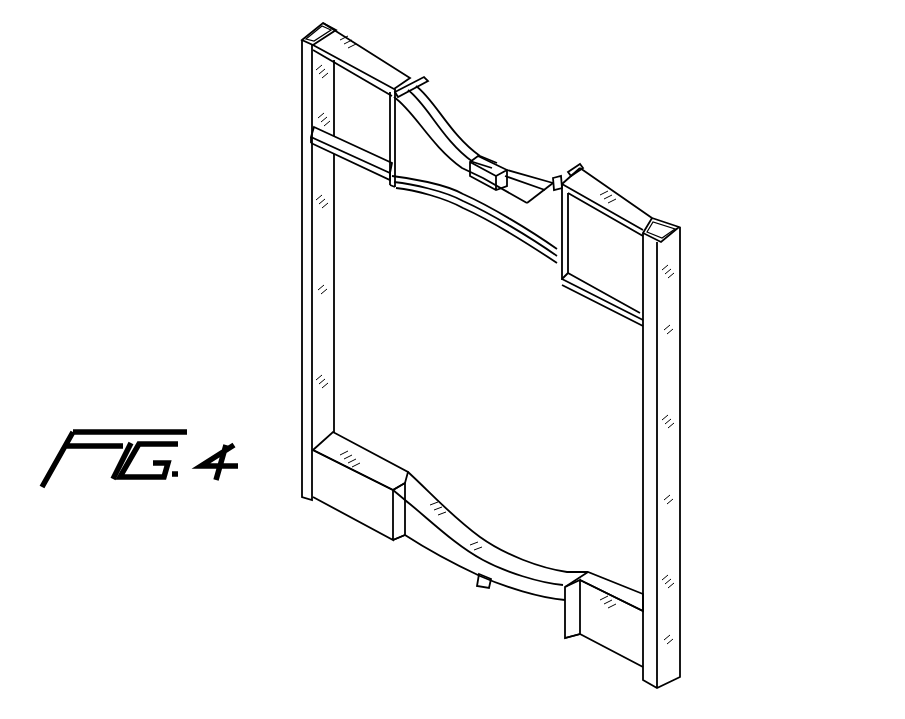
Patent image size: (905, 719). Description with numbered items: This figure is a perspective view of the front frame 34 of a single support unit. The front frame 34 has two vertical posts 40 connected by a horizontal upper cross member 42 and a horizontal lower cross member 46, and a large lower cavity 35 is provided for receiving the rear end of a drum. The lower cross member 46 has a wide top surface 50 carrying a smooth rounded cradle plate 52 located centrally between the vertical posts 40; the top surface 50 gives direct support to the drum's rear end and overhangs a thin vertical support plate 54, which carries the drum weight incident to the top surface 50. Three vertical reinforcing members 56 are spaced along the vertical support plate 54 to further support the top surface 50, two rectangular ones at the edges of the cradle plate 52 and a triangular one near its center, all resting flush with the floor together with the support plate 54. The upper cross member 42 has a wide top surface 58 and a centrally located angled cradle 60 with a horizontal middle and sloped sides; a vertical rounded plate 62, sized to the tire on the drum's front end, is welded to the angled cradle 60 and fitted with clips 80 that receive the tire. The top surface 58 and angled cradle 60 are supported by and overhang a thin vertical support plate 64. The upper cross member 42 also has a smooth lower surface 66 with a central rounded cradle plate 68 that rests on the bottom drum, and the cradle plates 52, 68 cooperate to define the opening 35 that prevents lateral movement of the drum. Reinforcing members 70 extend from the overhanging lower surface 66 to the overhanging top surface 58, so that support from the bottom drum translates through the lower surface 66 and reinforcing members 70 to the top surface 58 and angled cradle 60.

The front frame 34 is at (655, 96).
The lower cavity 35 is at (522, 370).
The vertical post 40 is at (304, 299).
The upper cross member 42 is at (636, 190).
The lower cross member 46 is at (578, 560).
The top surface 50 is at (350, 436).
The rounded cradle plate 52 is at (413, 481).
The vertical support plate 54 is at (350, 494).
The vertical reinforcing member 56 is at (392, 540).
The top surface 58 is at (381, 62).
The angled cradle 60 is at (437, 103).
The vertical rounded plate 62 is at (537, 180).
The vertical support plate 64 is at (343, 89).
The lower surface 66 is at (375, 183).
The rounded cradle plate 68 is at (458, 200).
The reinforcing member 70 is at (382, 150).
The clip 80 is at (500, 160).